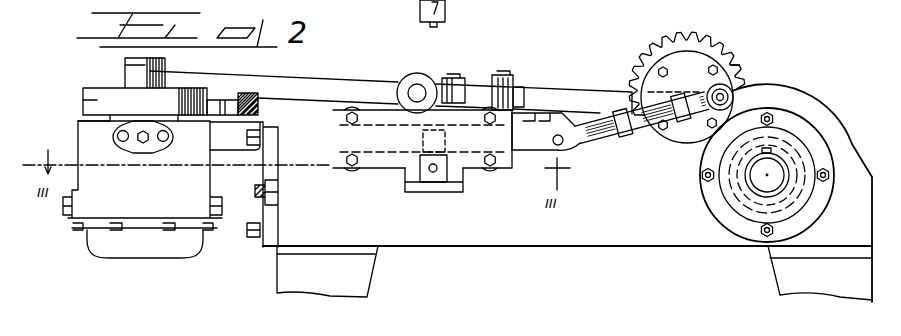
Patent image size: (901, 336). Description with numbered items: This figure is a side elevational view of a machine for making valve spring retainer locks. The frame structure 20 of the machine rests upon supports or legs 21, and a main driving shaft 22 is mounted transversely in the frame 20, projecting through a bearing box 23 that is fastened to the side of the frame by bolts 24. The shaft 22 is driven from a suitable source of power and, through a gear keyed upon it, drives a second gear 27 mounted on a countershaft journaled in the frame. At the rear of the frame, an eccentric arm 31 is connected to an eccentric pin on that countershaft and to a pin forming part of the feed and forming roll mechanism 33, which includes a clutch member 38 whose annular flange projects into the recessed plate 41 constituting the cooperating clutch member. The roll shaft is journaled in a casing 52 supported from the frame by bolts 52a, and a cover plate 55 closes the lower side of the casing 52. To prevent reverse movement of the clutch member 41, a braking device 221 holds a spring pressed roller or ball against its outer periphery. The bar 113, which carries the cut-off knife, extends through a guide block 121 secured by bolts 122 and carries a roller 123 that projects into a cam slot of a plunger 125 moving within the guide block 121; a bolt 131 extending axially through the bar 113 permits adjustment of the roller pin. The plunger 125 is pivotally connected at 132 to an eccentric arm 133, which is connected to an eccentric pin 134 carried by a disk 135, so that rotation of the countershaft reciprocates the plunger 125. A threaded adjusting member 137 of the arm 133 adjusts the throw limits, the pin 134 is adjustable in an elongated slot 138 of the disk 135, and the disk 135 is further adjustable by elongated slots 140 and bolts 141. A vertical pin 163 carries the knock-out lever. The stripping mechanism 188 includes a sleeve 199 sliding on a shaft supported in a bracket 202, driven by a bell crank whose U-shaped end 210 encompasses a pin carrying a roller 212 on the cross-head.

The frame structure 20 is at (847, 122).
The supports or legs 21 is at (358, 277).
The main driving shaft 22 is at (763, 180).
The bearing box 23 is at (800, 200).
The bolts 24 is at (770, 114).
The second gear 27 is at (732, 63).
The eccentric arm 31 is at (597, 100).
The feed and forming roll mechanism 33 is at (75, 119).
The clutch member 38 is at (105, 88).
The recessed plate 41 is at (92, 100).
The casing 52 is at (170, 184).
The bolts 52a is at (255, 240).
The cover plate 55 is at (135, 243).
The bar 113 is at (465, 172).
The guide block 121 is at (380, 162).
The bolts 122 is at (350, 124).
The roller 123 is at (447, 141).
The plunger 125 is at (475, 3).
The bolt 131 is at (433, 172).
The pivotal connection 132 is at (558, 134).
The eccentric arm 133 is at (578, 148).
The eccentric pin 134 is at (731, 88).
The disk 135 is at (705, 58).
The threaded adjusting member 137 is at (657, 142).
The elongated slot 138 is at (685, 78).
The elongated slots 140 is at (797, 31).
The bolts 141 is at (720, 48).
The vertical pin 163 is at (253, 95).
The stripping mechanism 188 is at (428, 70).
The sleeve 199 is at (453, 97).
The bracket 202 is at (408, 78).
The U-shaped end 210 is at (487, 90).
The roller 212 is at (515, 95).
The braking device 221 is at (210, 108).